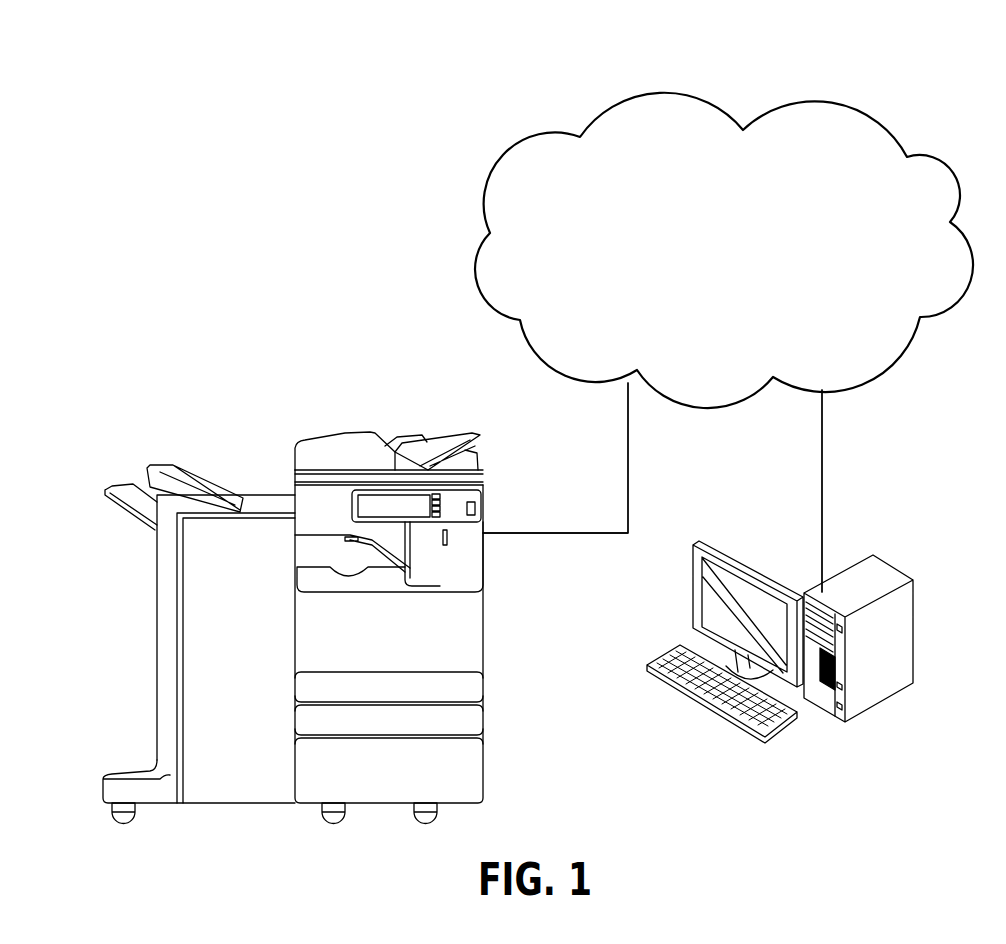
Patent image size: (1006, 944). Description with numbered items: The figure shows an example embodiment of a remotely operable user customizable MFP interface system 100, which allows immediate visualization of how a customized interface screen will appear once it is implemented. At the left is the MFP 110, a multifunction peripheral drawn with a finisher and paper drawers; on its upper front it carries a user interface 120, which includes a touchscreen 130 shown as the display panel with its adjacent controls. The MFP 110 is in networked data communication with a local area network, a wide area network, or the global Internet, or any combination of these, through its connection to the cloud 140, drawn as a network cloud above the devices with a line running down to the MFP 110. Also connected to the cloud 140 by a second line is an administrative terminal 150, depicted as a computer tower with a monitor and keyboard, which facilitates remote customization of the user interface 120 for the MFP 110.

The remotely operable user customizable MFP interface system 100 is at (897, 117).
The MFP 110 is at (337, 621).
The user interface 120 is at (462, 470).
The touchscreen 130 is at (413, 508).
The cloud 140 is at (883, 377).
The administrative terminal 150 is at (893, 567).